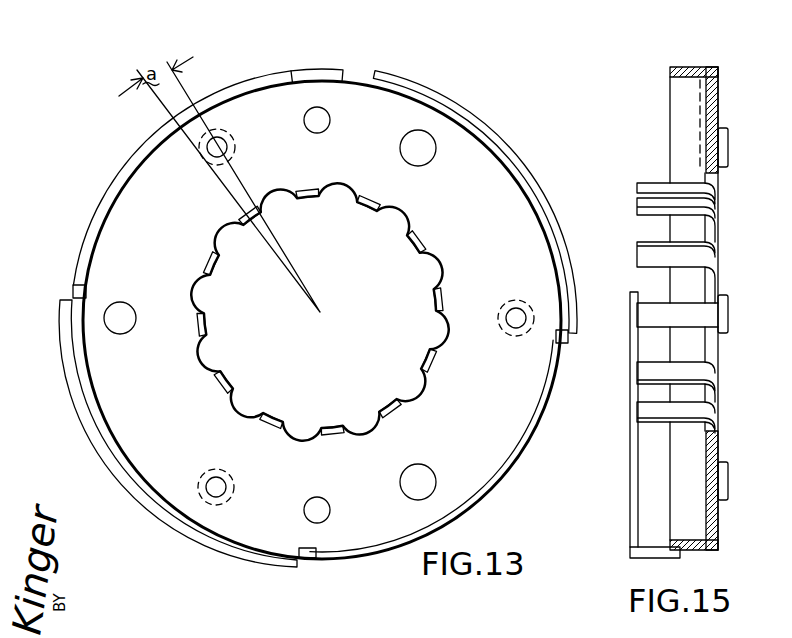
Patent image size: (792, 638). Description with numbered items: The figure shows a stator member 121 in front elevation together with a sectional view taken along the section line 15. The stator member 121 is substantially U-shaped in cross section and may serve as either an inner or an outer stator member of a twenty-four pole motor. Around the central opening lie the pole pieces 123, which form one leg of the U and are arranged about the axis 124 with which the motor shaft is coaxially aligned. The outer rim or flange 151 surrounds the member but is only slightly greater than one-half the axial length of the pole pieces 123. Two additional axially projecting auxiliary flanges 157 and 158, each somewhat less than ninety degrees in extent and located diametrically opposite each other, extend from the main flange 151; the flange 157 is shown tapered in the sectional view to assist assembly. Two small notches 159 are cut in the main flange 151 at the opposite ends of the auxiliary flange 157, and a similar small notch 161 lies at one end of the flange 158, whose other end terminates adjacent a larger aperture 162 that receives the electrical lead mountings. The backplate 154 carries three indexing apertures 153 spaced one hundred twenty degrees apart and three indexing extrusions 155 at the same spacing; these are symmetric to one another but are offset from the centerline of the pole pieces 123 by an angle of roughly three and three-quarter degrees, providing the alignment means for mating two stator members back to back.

In FIG. 13, the section line 15 is at (295, 36).
In FIG. 13, the stator member 121 is at (365, 132).
In FIG. 13, the pole pieces 123 is at (208, 284).
In FIG. 15, the pole pieces 123 is at (637, 380).
In FIG. 13, the axis 124 is at (328, 315).
In FIG. 13, the outer rim or flange 151 is at (110, 184).
In FIG. 15, the outer rim or flange 151 is at (665, 72).
In FIG. 13, the indexing apertures 153 is at (431, 161).
In FIG. 13, the backplate 154 is at (378, 525).
In FIG. 13, the indexing extrusions 155 is at (222, 129).
In FIG. 15, the indexing extrusions 155 is at (731, 148).
In FIG. 13, the auxiliary axially projecting flange 157 is at (165, 517).
In FIG. 15, the auxiliary axially projecting flange 157 is at (648, 518).
In FIG. 13, the auxiliary axially projecting flange 158 is at (506, 132).
In FIG. 13, the notches 159 is at (77, 288).
In FIG. 13, the notch 161 is at (573, 345).
In FIG. 13, the aperture 162 is at (332, 74).